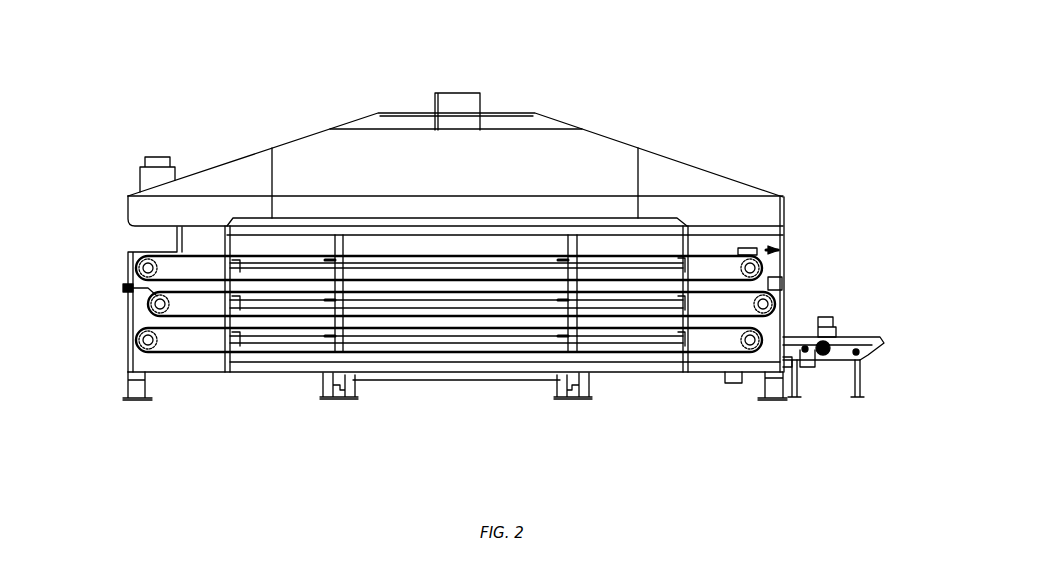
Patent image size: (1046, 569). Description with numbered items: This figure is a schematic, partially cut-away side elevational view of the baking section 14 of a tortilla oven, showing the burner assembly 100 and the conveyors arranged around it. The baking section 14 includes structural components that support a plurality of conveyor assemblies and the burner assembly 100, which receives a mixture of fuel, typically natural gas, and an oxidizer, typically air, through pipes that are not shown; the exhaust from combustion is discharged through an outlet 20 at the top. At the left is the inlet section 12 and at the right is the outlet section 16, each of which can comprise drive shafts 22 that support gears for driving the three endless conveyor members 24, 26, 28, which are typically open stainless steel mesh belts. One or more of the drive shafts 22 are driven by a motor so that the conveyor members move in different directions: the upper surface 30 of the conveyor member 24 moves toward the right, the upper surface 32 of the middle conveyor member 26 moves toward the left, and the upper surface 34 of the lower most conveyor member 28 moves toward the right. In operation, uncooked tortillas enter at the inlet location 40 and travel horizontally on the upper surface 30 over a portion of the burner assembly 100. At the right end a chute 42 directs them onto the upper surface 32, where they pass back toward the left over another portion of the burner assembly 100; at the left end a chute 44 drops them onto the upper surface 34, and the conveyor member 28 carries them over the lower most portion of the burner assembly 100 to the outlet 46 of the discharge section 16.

The inlet section 12 is at (176, 40).
The baking section 14 is at (380, 404).
The outlet section 16 is at (882, 382).
The outlet 20 is at (433, 97).
The drive shafts 22 is at (127, 268).
The conveyor member 24 is at (265, 250).
The conveyor member 26 is at (258, 288).
The conveyor member 28 is at (253, 327).
The upper surface 30 is at (362, 337).
The upper surface 32 is at (350, 250).
The upper surface 34 is at (327, 253).
The inlet location 40 is at (127, 253).
The chute 42 is at (786, 283).
The chute 44 is at (133, 312).
The outlet 46 is at (767, 325).
The burner assembly 100 is at (697, 258).